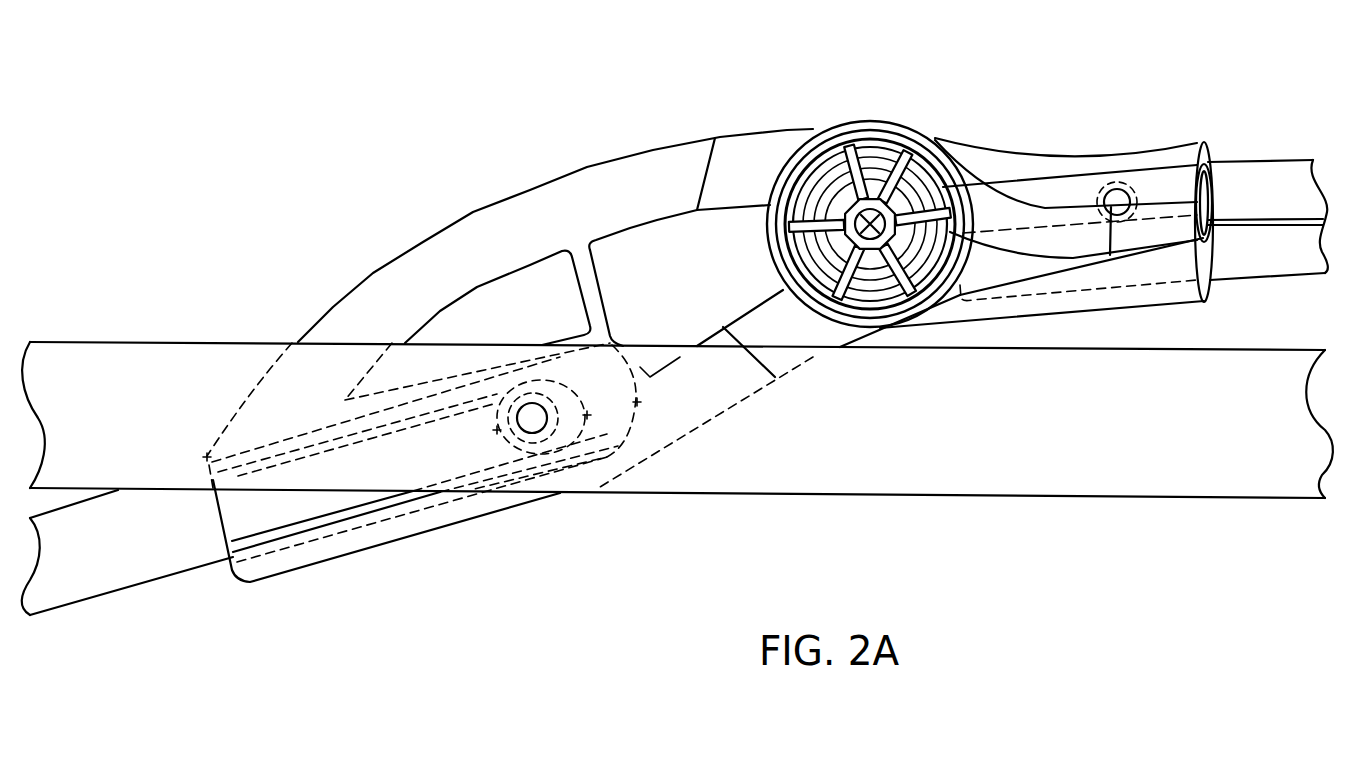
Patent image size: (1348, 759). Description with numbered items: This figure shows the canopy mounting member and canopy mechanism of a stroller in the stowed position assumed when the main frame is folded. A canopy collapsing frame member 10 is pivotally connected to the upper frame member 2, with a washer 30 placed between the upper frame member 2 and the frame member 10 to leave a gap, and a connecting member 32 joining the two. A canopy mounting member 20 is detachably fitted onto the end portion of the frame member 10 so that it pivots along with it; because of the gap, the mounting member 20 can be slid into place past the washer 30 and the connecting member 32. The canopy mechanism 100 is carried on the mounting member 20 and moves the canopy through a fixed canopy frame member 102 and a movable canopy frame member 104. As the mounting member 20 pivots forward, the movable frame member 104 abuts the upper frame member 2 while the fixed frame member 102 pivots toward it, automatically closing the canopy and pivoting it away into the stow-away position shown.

The upper frame member 2 is at (1038, 436).
The canopy collapsing frame member 10 is at (137, 563).
The canopy mounting member 20 is at (576, 158).
The washer 30 is at (458, 449).
The connecting member 32 is at (458, 449).
The canopy mechanism 100 is at (899, 106).
The fixed canopy frame member 102 is at (1258, 170).
The movable canopy frame member 104 is at (1260, 260).